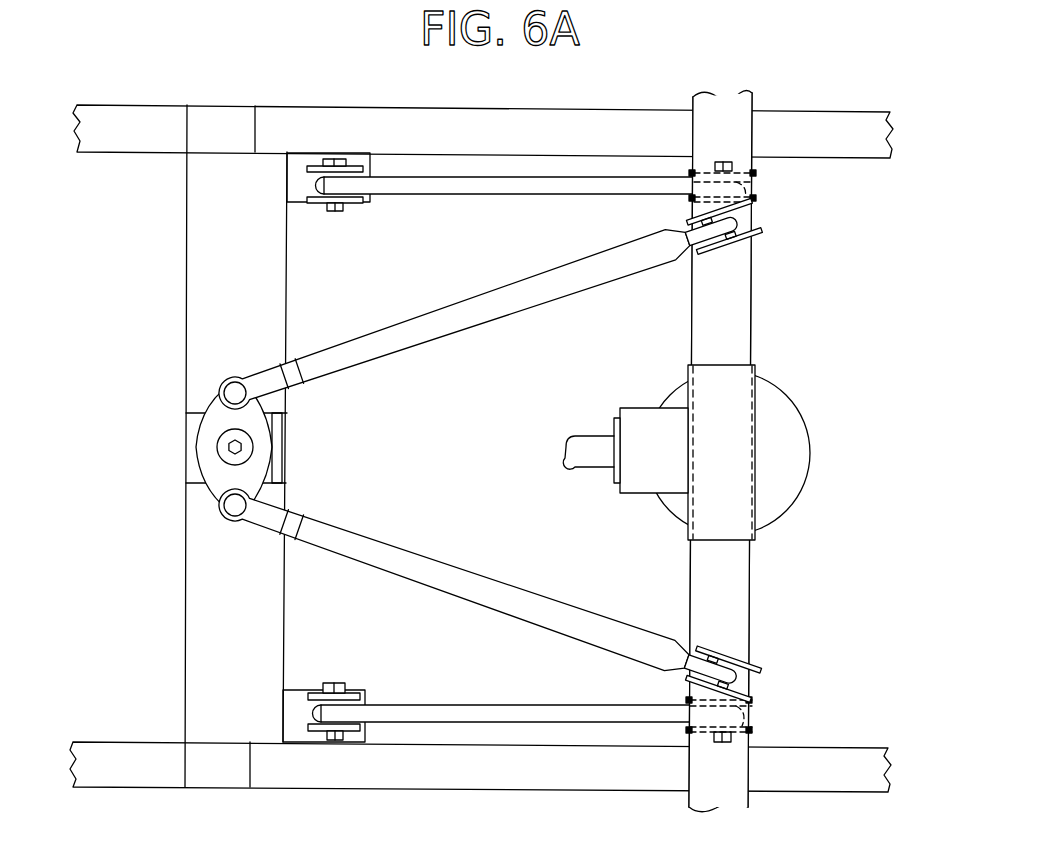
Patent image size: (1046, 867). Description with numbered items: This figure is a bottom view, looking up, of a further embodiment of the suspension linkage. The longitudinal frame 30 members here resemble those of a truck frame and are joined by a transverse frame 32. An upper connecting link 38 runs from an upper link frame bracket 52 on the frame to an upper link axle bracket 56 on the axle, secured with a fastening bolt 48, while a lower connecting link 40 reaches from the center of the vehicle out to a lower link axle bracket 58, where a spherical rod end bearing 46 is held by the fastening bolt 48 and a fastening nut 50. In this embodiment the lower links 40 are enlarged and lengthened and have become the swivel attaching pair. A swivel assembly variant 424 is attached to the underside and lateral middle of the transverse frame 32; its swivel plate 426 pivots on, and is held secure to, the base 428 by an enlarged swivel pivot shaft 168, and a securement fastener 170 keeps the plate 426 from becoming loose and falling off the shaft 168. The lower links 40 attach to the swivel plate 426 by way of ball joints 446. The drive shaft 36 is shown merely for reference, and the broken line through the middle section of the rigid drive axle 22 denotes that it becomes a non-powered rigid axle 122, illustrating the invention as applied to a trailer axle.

The longitudinal frame 30 is at (152, 138).
The transverse frame 32 is at (205, 292).
The upper link frame bracket 52 is at (312, 205).
The fastening bolt 48 is at (340, 212).
The upper connecting link 38 is at (438, 194).
The non-powered rigid axle 122 is at (740, 310).
The rigid drive axle 22 is at (745, 528).
The drive shaft 36 is at (597, 458).
The upper link axle bracket 56 is at (756, 173).
The swivel assembly variant 424 is at (313, 467).
The base 428 is at (272, 423).
The lower connecting link 40 is at (508, 305).
The spherical rod end bearing 46 is at (690, 250).
The lower link axle bracket 58 is at (725, 450).
The fastening nut 50 is at (705, 645).
The swivel plate 426 is at (222, 405).
The ball joint 446 is at (220, 492).
The swivel pivot shaft 168 is at (223, 440).
The securement fastener 170 is at (232, 448).